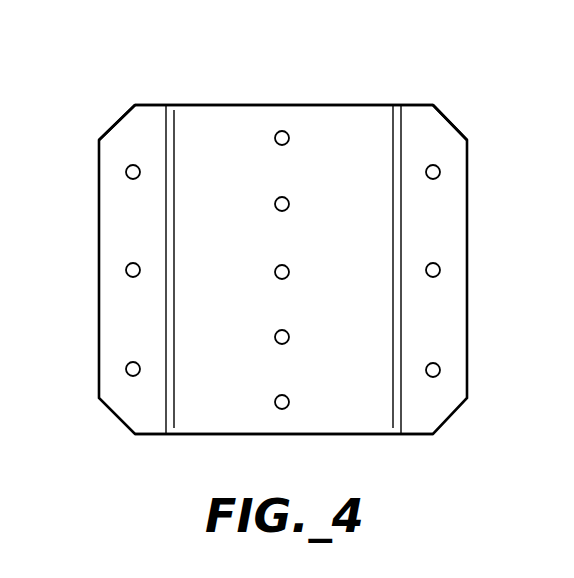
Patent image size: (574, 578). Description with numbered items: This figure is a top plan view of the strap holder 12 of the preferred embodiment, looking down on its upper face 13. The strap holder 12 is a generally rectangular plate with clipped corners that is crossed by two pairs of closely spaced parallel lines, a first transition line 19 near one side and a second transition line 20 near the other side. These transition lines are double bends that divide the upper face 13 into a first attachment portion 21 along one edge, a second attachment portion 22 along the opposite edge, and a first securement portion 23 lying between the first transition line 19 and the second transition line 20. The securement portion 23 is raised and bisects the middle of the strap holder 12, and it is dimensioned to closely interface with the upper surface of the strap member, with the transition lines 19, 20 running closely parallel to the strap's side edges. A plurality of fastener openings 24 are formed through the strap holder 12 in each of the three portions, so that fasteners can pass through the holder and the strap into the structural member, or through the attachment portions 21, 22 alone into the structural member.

The strap holder 12 is at (366, 100).
The upper face 13 is at (232, 438).
The first transition line 19 is at (166, 387).
The second transition line 20 is at (402, 228).
The first attachment portion 21 is at (123, 128).
The second attachment portion 22 is at (414, 113).
The first securement portion 23 is at (325, 108).
The fastener openings 24 is at (126, 171).